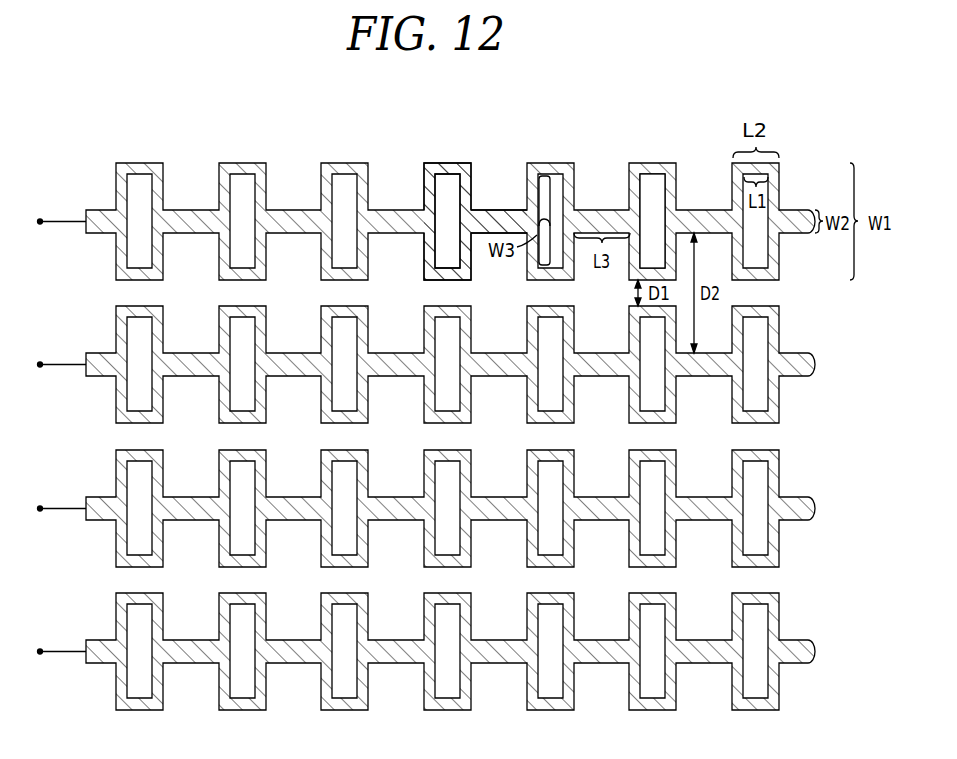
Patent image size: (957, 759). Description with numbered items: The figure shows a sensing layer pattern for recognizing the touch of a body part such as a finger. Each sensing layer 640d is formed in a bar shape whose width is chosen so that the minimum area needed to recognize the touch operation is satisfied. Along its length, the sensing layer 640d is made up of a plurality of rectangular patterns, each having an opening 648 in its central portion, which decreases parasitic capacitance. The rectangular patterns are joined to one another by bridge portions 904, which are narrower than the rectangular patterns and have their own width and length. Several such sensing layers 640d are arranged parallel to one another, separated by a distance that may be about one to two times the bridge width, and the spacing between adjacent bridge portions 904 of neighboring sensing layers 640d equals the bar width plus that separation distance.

The sensing layer 640d is at (440, 163).
The bridge portion 904 is at (508, 217).
The opening 648 is at (653, 185).